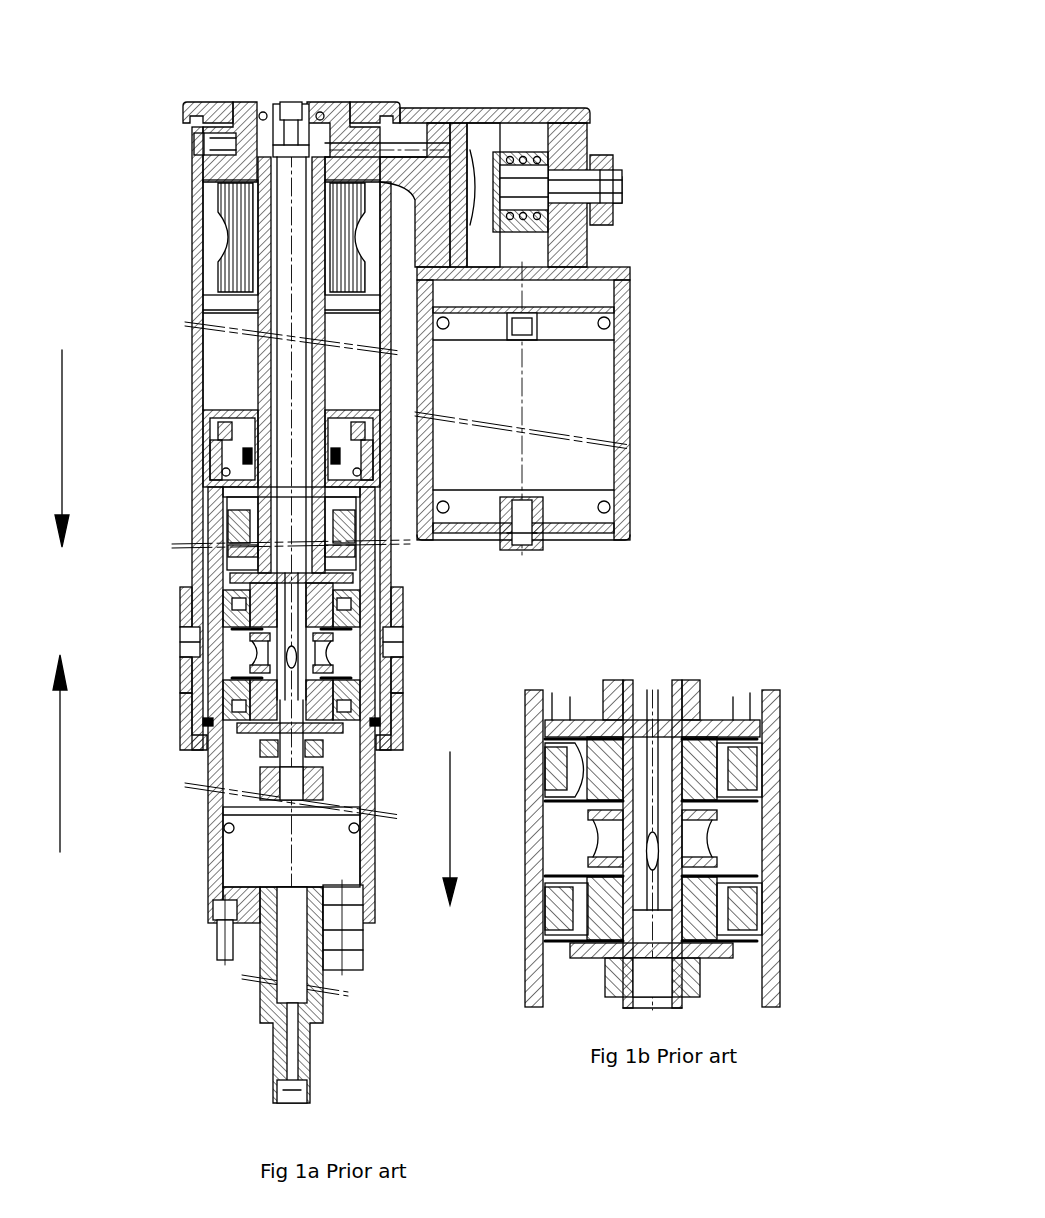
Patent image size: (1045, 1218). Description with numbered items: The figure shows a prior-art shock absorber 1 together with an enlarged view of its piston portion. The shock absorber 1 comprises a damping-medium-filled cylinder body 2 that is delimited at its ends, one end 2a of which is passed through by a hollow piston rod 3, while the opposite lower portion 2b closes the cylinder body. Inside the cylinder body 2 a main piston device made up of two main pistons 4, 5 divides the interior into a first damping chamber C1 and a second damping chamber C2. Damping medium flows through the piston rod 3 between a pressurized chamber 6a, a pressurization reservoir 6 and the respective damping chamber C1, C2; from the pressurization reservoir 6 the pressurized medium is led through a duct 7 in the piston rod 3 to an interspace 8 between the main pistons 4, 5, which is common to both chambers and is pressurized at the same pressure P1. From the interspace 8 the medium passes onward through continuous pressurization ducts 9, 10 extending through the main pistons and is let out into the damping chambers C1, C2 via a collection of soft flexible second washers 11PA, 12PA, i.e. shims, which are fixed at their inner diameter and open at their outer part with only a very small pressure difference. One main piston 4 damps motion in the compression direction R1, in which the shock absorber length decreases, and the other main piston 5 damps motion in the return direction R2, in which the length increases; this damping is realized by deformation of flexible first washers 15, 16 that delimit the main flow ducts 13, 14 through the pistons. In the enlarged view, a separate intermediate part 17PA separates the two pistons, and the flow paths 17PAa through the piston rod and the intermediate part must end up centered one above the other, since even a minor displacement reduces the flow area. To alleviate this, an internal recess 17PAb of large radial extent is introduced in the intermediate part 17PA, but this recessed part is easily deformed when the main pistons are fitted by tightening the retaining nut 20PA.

In FIG. 1A, the shock absorber 1 is at (163, 123).
In FIG. 1A, the duct 7 is at (298, 197).
In FIG. 1A, the pressurized chamber 6a is at (617, 267).
In FIG. 1A, the pressurization reservoir 6 is at (633, 347).
In FIG. 1A, the hollow piston rod 3 is at (258, 297).
In FIG. 1A, the cylinder body 2 is at (197, 470).
In FIG. 1A, the end of the cylinder body 2a is at (200, 420).
In FIG. 1A, the lower cylinder portion 2b is at (210, 887).
In FIG. 1A, the first damping chamber C1 is at (195, 552).
In FIG. 1A, the second damping chamber C2 is at (210, 813).
In FIG. 1A, the main piston 4 is at (222, 597).
In FIG. 1A, the interspace 8 is at (237, 648).
In FIG. 1A, the main piston 5 is at (180, 727).
In FIG. 1A, the pressure P1 is at (515, 290).
In FIG. 1A, the first direction R1 is at (50, 753).
In FIG. 1A, the second direction R2 is at (51, 448).
In FIG. 1B, the second direction R2 is at (441, 828).
In FIG. 1B, the flexible second washer 11PA is at (587, 736).
In FIG. 1B, the pressurization duct 9 is at (578, 780).
In FIG. 1B, the flexible first washer 15 is at (623, 807).
In FIG. 1B, the flexible first washer 16 is at (623, 873).
In FIG. 1B, the main flow duct 14 is at (563, 923).
In FIG. 1B, the flexible second washer 12PA is at (603, 943).
In FIG. 1B, the main flow duct 13 is at (720, 757).
In FIG. 1B, the intermediate part 17PA is at (717, 810).
In FIG. 1B, the flow path 17PAa is at (700, 832).
In FIG. 1B, the internal recess 17PAb is at (707, 858).
In FIG. 1B, the pressurization duct 10 is at (723, 908).
In FIG. 1B, the retaining nut 20PA is at (700, 973).